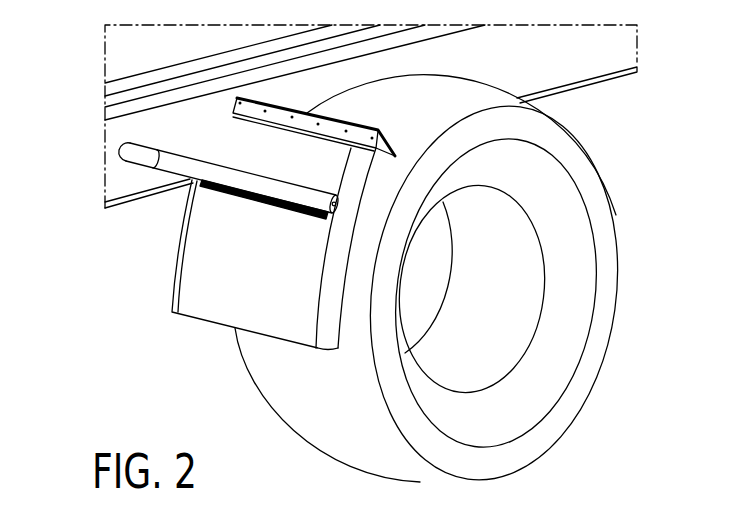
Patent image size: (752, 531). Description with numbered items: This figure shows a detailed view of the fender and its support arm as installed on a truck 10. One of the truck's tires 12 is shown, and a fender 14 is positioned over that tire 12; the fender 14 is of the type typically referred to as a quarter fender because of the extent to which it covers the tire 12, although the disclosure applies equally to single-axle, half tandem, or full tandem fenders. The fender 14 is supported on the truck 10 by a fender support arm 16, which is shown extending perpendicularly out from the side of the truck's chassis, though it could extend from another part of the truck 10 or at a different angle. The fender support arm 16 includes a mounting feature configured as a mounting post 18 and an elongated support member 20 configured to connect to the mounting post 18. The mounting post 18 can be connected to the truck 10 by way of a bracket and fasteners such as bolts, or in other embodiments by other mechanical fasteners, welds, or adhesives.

The truck 10 is at (596, 80).
The tire 12 is at (590, 370).
The fender 14 is at (205, 303).
The fender support arm 16 is at (222, 227).
The mounting post 18 is at (133, 156).
The elongated support member 20 is at (298, 212).